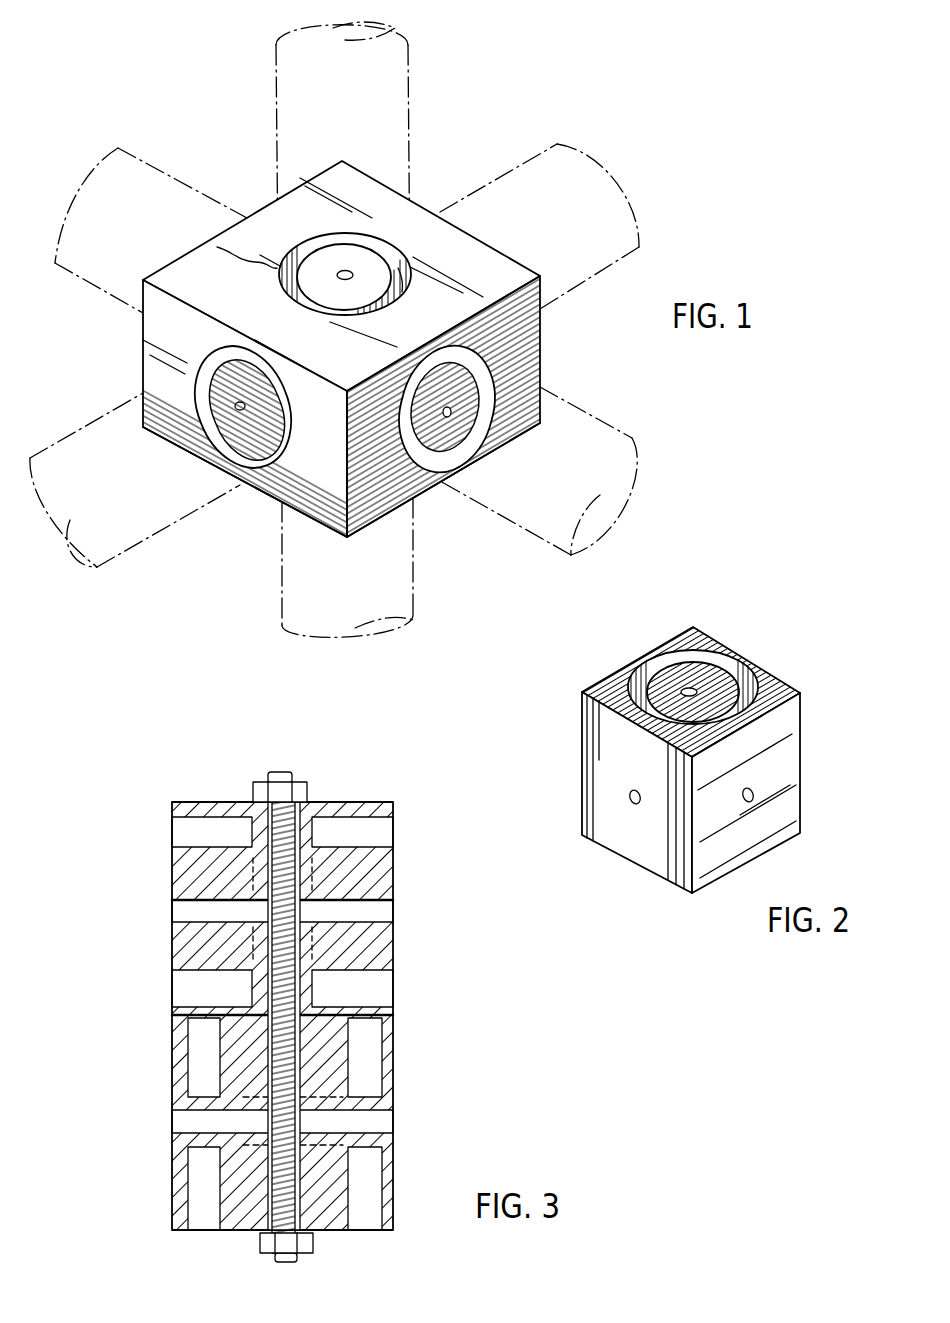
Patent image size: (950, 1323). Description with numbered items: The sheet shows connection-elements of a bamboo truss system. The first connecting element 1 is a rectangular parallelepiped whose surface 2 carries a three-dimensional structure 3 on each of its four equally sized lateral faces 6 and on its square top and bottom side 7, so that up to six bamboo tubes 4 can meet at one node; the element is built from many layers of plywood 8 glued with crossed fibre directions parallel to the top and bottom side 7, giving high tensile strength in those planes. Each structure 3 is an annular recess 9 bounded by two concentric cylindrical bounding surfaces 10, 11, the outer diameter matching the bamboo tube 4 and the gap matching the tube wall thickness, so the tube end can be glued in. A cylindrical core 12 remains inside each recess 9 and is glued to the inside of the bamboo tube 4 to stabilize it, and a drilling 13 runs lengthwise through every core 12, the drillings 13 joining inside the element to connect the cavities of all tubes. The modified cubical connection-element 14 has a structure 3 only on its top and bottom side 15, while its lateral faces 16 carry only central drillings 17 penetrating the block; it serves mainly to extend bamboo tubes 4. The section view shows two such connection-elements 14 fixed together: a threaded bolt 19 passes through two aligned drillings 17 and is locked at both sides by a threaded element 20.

In FIG. 1, the connection-element 1 is at (318, 356).
In FIG. 1, the surface 2 is at (260, 213).
In FIG. 2, the three-dimensional structure 3 is at (707, 755).
In FIG. 3, the three-dimensional structure 3 is at (209, 1225).
In FIG. 1, the bamboo tube 4 is at (541, 163).
In FIG. 1, the lateral face 6 is at (530, 360).
In FIG. 1, the top and bottom side 7 is at (178, 263).
In FIG. 1, the layer of plywood 8 is at (380, 503).
In FIG. 1, the annular recess 9 is at (324, 308).
In FIG. 1, the bounding surface 10 is at (303, 346).
In FIG. 1, the bounding surface 11 is at (402, 292).
In FIG. 1, the cylindrical core 12 is at (243, 433).
In FIG. 1, the drilling 13 is at (238, 410).
In FIG. 2, the drilling 13 is at (686, 690).
In FIG. 2, the connection-element 14 is at (707, 755).
In FIG. 3, the connection-element 14 is at (393, 885).
In FIG. 2, the top and bottom side 15 is at (704, 647).
In FIG. 2, the lateral face 16 is at (637, 847).
In FIG. 2, the central drilling 17 is at (630, 798).
In FIG. 3, the threaded bolt 19 is at (285, 773).
In FIG. 3, the threaded element 20 is at (306, 788).